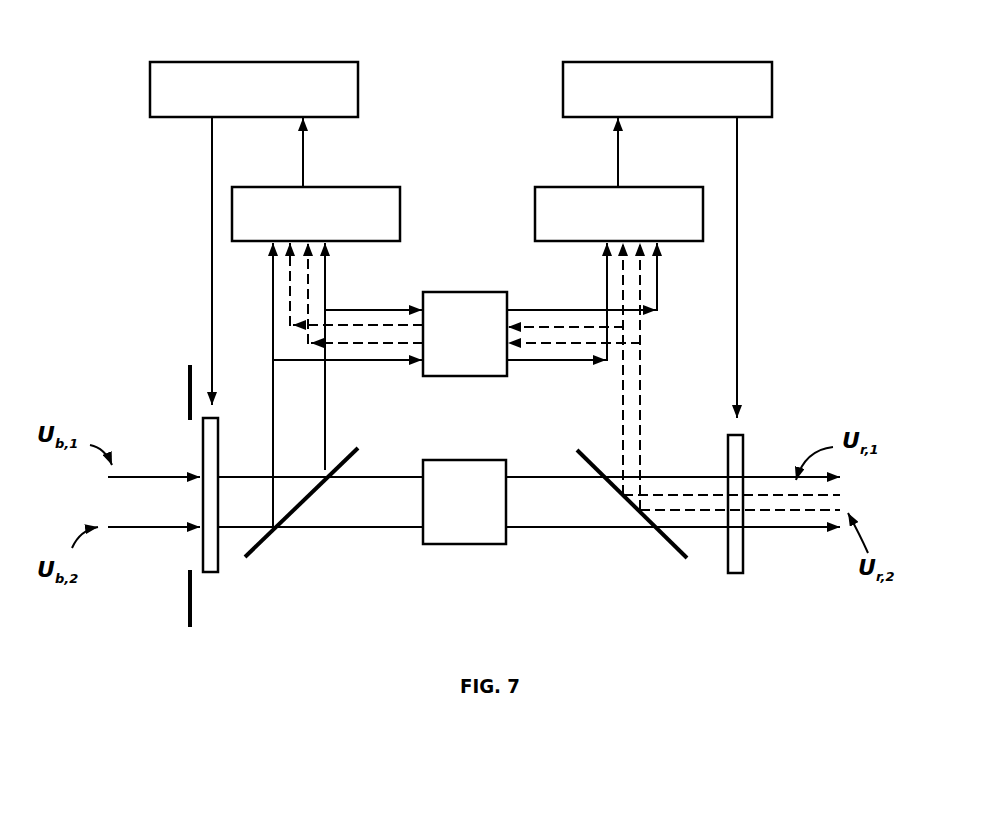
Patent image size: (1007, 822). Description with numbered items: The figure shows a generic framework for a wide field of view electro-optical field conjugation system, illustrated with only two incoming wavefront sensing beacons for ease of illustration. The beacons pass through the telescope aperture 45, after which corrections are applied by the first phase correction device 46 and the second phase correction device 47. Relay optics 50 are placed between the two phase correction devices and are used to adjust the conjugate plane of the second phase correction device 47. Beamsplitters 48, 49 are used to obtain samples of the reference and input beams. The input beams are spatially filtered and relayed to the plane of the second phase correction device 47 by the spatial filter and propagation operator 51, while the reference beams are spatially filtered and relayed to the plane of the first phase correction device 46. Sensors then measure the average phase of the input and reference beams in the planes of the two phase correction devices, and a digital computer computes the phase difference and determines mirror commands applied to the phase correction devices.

The telescope aperture 45 is at (182, 622).
The first phase correction device 46 is at (225, 573).
The second phase correction device 47 is at (750, 566).
The beamsplitter 48 is at (268, 545).
The beamsplitter 49 is at (666, 548).
The relay optics 50 is at (416, 545).
The spatial filter and propagation operator 51 is at (462, 289).